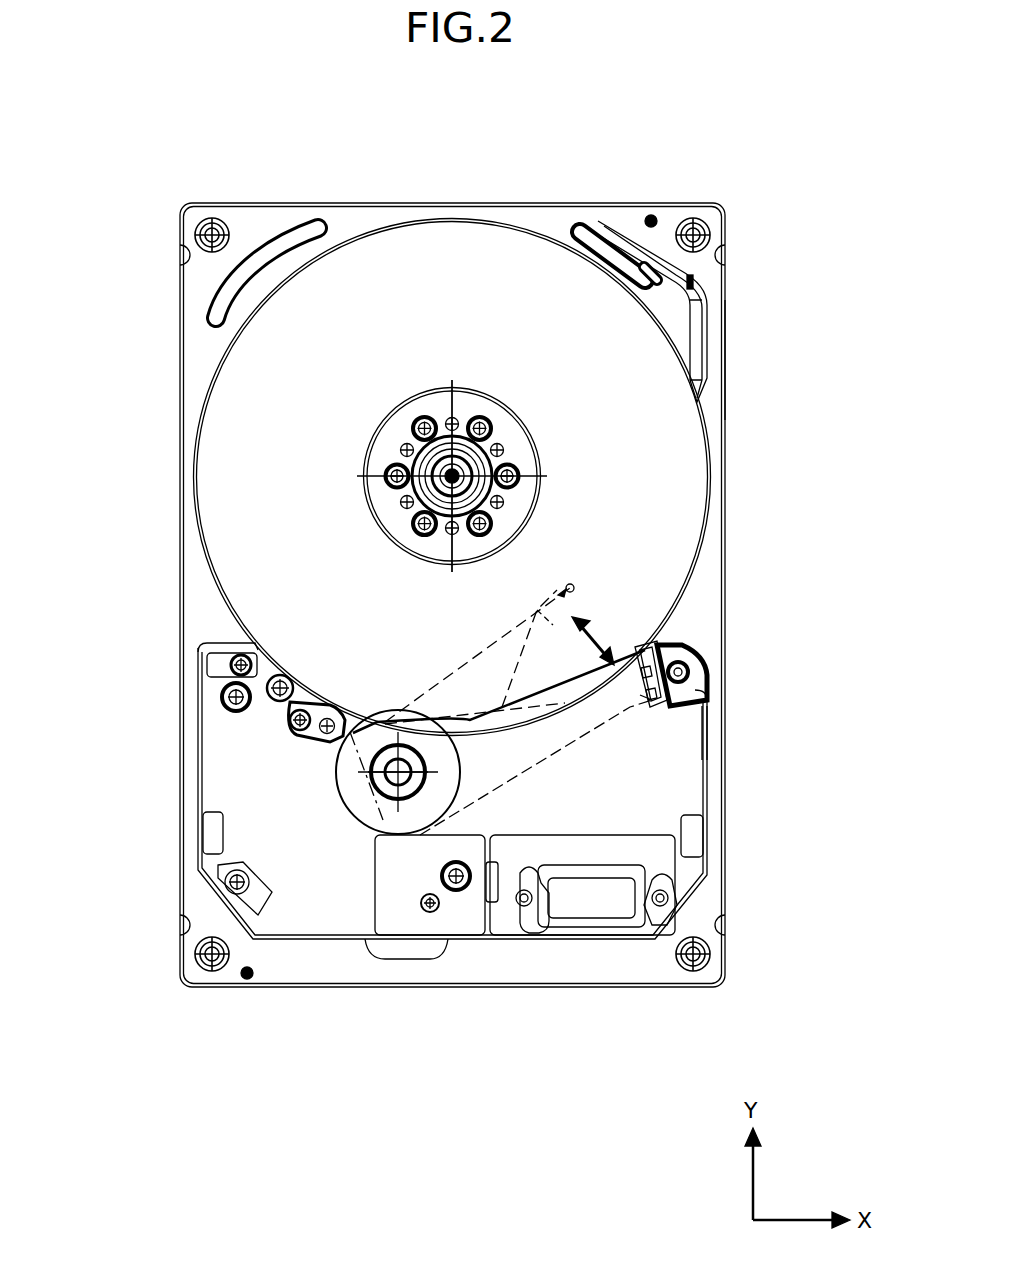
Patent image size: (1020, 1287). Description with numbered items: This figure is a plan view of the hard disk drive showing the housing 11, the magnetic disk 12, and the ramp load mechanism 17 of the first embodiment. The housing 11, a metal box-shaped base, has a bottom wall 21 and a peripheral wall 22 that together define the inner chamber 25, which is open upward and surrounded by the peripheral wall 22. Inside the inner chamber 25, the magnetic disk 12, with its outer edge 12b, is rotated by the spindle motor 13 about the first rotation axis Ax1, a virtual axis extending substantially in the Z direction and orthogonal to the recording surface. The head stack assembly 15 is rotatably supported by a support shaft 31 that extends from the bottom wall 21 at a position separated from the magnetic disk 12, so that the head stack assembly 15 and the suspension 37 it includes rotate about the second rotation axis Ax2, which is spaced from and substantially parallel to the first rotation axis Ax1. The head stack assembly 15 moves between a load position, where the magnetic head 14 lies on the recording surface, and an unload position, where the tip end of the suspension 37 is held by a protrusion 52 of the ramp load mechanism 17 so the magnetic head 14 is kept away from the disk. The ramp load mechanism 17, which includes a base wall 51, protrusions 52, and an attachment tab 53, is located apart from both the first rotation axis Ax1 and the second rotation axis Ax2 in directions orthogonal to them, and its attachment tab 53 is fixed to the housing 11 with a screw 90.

The housing 11 is at (232, 199).
The magnetic disk 12 is at (483, 250).
The outer edge 12b is at (596, 268).
The spindle motor 13 is at (448, 468).
The magnetic head 14 is at (575, 590).
The head stack assembly 15 is at (426, 678).
The ramp load mechanism 17 is at (710, 679).
The bottom wall 21 is at (727, 790).
The peripheral wall 22 is at (727, 357).
The inner chamber 25 is at (307, 916).
The support shaft 31 is at (398, 776).
The suspension 37 is at (600, 612).
The base wall 51 is at (660, 650).
The protrusion 52 is at (637, 648).
The attachment tab 53 is at (668, 703).
The screw 90 is at (705, 700).
The first rotation axis Ax1 is at (430, 470).
The second rotation axis Ax2 is at (372, 762).